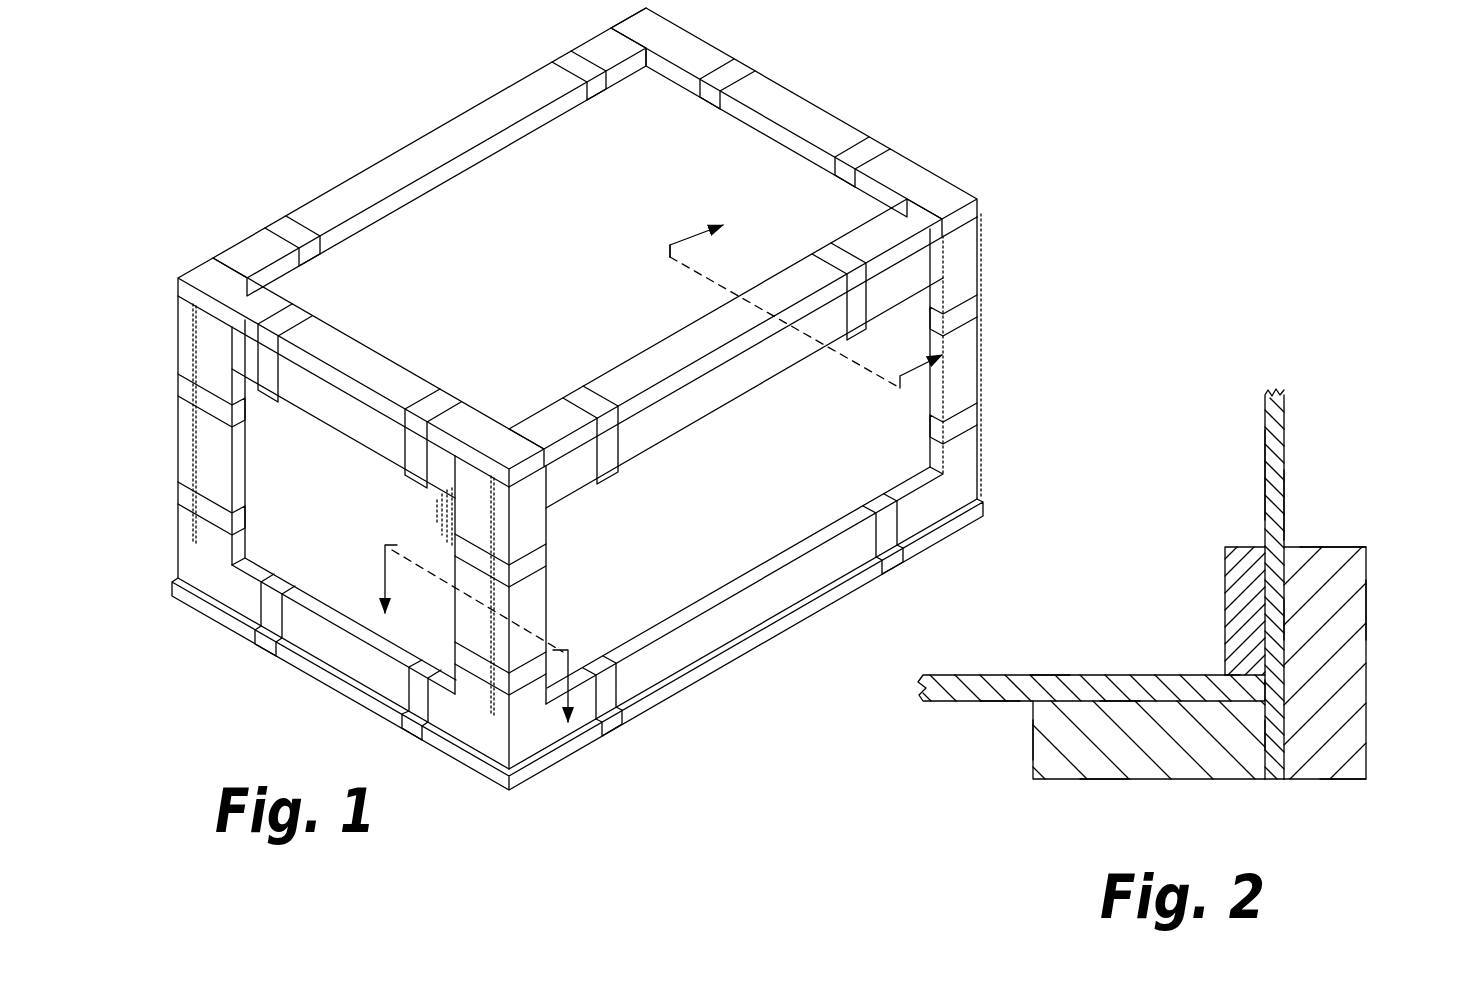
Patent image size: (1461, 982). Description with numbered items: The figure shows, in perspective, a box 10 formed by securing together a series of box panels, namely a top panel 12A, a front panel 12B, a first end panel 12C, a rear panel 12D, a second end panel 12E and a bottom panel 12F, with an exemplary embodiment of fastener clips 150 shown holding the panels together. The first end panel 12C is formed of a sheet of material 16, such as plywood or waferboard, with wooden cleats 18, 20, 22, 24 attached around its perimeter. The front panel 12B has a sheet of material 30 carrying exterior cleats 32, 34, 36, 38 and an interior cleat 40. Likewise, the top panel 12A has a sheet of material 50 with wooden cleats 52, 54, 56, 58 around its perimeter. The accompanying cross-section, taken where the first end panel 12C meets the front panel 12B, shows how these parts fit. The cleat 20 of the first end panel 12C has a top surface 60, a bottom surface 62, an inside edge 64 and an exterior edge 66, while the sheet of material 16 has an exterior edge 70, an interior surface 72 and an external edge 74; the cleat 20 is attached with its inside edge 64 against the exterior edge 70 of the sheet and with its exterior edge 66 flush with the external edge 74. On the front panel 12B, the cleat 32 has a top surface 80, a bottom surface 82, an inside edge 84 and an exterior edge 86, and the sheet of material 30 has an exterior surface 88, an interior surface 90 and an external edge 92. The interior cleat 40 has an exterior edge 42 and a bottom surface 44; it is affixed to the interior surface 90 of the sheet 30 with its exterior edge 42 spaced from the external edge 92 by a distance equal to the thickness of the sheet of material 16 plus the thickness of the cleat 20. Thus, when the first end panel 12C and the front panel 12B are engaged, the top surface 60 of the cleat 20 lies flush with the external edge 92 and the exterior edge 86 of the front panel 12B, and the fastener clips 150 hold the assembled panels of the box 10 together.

In FIG. 1, the box 10 is at (1005, 265).
In FIG. 1, the top panel 12A is at (586, 253).
In FIG. 1, the front panel 12B is at (687, 530).
In FIG. 2, the front panel 12B is at (1303, 405).
In FIG. 1, the first end panel 12C is at (327, 540).
In FIG. 2, the first end panel 12C is at (948, 718).
In FIG. 1, the rear panel 12D is at (335, 175).
In FIG. 1, the second end panel 12E is at (928, 155).
In FIG. 1, the bottom panel 12F is at (737, 668).
In FIG. 1, the sheet of material 16 is at (355, 600).
In FIG. 2, the sheet of material 16 is at (1010, 688).
In FIG. 1, the wooden cleat 18 is at (313, 640).
In FIG. 1, the cleat 20 is at (470, 620).
In FIG. 2, the cleat 20 is at (1180, 765).
In FIG. 1, the wooden cleat 22 is at (368, 440).
In FIG. 1, the wooden cleat 24 is at (210, 460).
In FIG. 1, the sheet of material 30 is at (765, 545).
In FIG. 2, the sheet of material 30 is at (1278, 450).
In FIG. 1, the exterior cleat 32 is at (545, 605).
In FIG. 2, the exterior cleat 32 is at (1355, 573).
In FIG. 1, the exterior cleat 34 is at (662, 668).
In FIG. 1, the exterior cleat 36 is at (965, 385).
In FIG. 1, the exterior cleat 38 is at (748, 380).
In FIG. 2, the interior cleat 40 is at (1237, 612).
In FIG. 2, the exterior edge 42 is at (1228, 680).
In FIG. 2, the bottom surface 44 is at (1272, 582).
In FIG. 1, the sheet of material 50 is at (730, 145).
In FIG. 1, the wooden cleat 52 is at (370, 360).
In FIG. 1, the wooden cleat 54 is at (655, 355).
In FIG. 1, the wooden cleat 56 is at (820, 130).
In FIG. 1, the wooden cleat 58 is at (455, 135).
In FIG. 2, the top surface 60 is at (1108, 780).
In FIG. 2, the bottom surface 62 is at (1122, 718).
In FIG. 2, the inside edge 64 is at (1032, 750).
In FIG. 2, the exterior edge 66 is at (1255, 733).
In FIG. 2, the exterior edge 70 is at (995, 703).
In FIG. 2, the interior surface 72 is at (1047, 676).
In FIG. 2, the external edge 74 is at (1255, 690).
In FIG. 2, the top surface 80 is at (1368, 605).
In FIG. 2, the bottom surface 82 is at (1275, 618).
In FIG. 2, the inside edge 84 is at (1335, 547).
In FIG. 2, the exterior edge 86 is at (1338, 780).
In FIG. 2, the exterior surface 88 is at (1285, 513).
In FIG. 2, the interior surface 90 is at (1263, 478).
In FIG. 2, the external edge 92 is at (1272, 780).
In FIG. 1, the fastener clip 150 is at (603, 108).